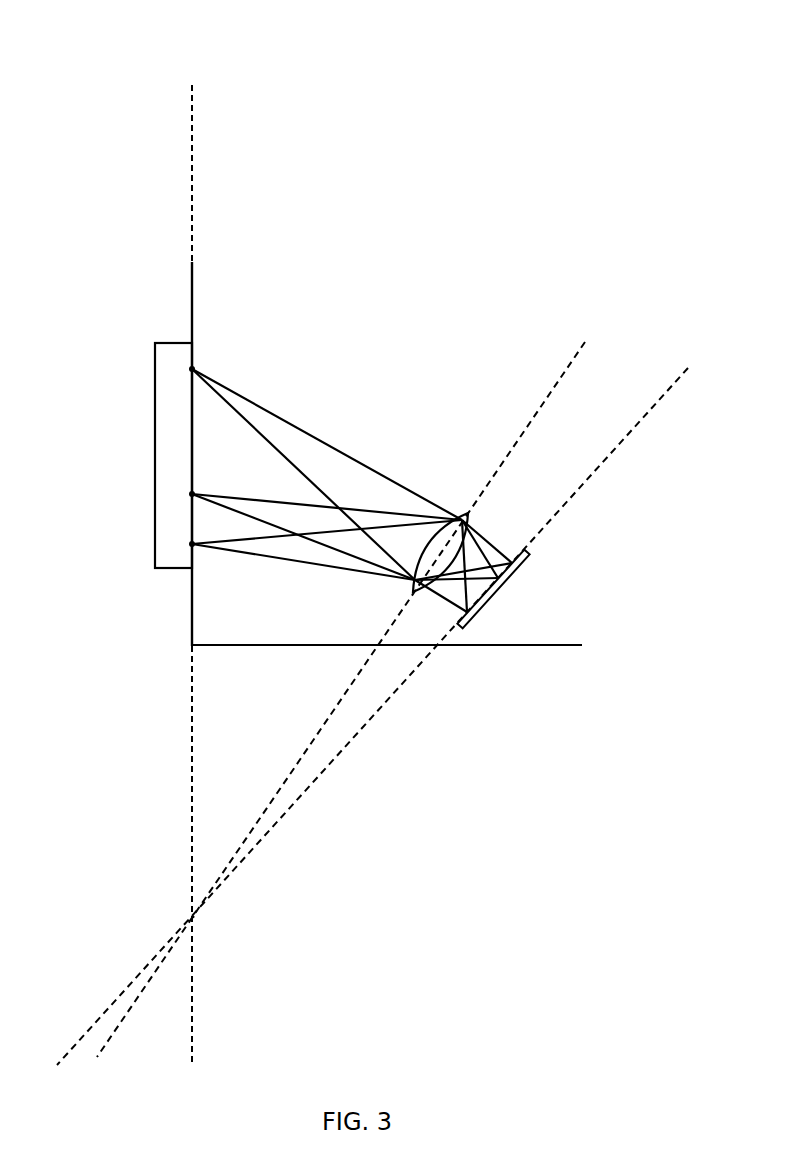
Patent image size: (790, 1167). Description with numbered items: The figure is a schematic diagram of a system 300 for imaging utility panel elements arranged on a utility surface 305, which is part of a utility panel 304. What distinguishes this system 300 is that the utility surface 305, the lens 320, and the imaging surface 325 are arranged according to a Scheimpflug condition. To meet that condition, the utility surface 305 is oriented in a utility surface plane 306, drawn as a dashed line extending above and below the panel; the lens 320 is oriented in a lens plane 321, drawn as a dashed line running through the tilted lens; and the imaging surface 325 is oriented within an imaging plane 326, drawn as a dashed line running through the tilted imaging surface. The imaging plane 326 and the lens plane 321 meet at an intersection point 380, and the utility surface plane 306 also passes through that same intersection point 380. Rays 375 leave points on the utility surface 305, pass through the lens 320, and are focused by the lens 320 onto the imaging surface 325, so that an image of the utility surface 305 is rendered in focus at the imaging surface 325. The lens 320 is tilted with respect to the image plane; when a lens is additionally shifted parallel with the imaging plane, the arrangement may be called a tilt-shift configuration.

The system 300 is at (527, 68).
The utility panel 304 is at (155, 459).
The utility surface 305 is at (192, 398).
The utility surface plane 306 is at (192, 737).
The lens 320 is at (465, 511).
The lens plane 321 is at (348, 688).
The imaging surface 325 is at (508, 572).
The imaging plane 326 is at (392, 698).
The rays 375 is at (303, 470).
The intersection point 380 is at (195, 918).